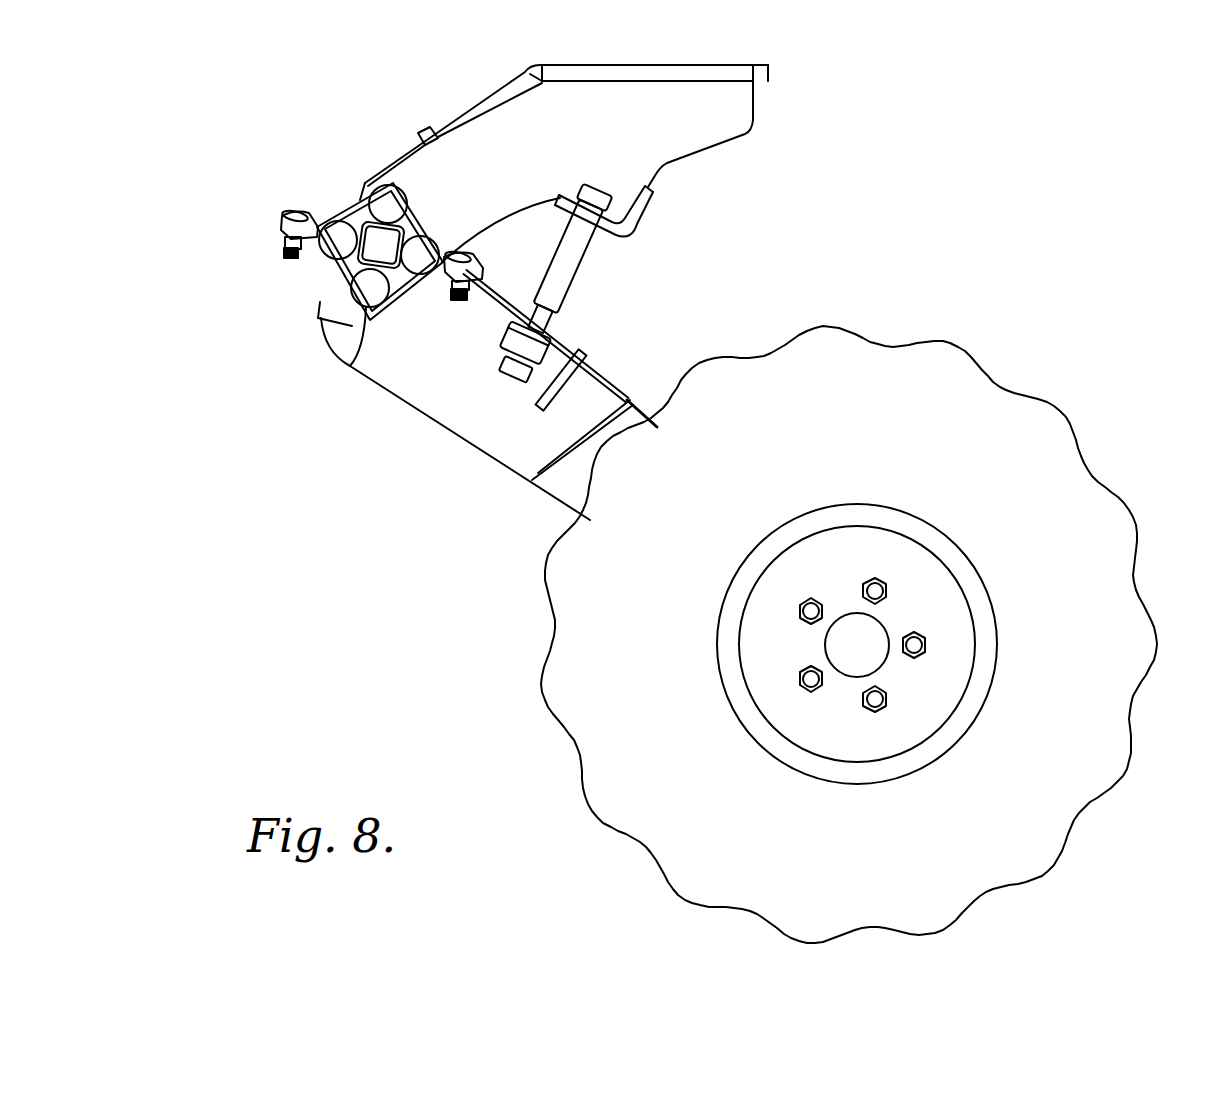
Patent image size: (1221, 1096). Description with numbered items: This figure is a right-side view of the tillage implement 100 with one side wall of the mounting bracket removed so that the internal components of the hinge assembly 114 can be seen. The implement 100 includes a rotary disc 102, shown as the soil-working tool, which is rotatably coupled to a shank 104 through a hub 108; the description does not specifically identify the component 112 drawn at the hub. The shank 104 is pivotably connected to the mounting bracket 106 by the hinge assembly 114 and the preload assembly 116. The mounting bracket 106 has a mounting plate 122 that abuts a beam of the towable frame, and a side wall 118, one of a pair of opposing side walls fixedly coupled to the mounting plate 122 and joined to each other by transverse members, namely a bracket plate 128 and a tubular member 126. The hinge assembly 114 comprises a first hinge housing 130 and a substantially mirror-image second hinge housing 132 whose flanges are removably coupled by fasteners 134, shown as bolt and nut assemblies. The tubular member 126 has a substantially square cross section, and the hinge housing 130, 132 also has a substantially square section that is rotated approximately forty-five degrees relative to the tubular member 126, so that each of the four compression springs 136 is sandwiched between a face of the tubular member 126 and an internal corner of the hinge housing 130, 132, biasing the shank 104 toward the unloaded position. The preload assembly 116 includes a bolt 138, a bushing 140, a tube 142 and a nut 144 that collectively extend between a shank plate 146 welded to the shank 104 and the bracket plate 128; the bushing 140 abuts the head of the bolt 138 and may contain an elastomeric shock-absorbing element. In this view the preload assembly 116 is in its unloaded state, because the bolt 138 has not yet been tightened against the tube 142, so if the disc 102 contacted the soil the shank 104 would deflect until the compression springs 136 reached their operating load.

The tillage implement 100 is at (272, 92).
The rotary disc 102 is at (1038, 785).
The shank 104 is at (533, 450).
The mounting bracket 106 is at (633, 97).
The hub 108 is at (868, 650).
The fasteners 112 is at (786, 706).
The hinge assembly 114 is at (260, 184).
The preload assembly 116 is at (650, 284).
The side wall 118 is at (537, 107).
The mounting plate 122 is at (677, 73).
The tubular member 126 is at (357, 258).
The bracket plate 128 is at (640, 215).
The first hinge housing 130 is at (360, 202).
The second hinge housing 132 is at (372, 293).
The fasteners 134 is at (282, 237).
The compression springs 136 is at (417, 253).
The bolt 138 is at (510, 370).
The bushing 140 is at (540, 345).
The tube 142 is at (585, 232).
The nut 144 is at (587, 193).
The shank plate 146 is at (583, 355).